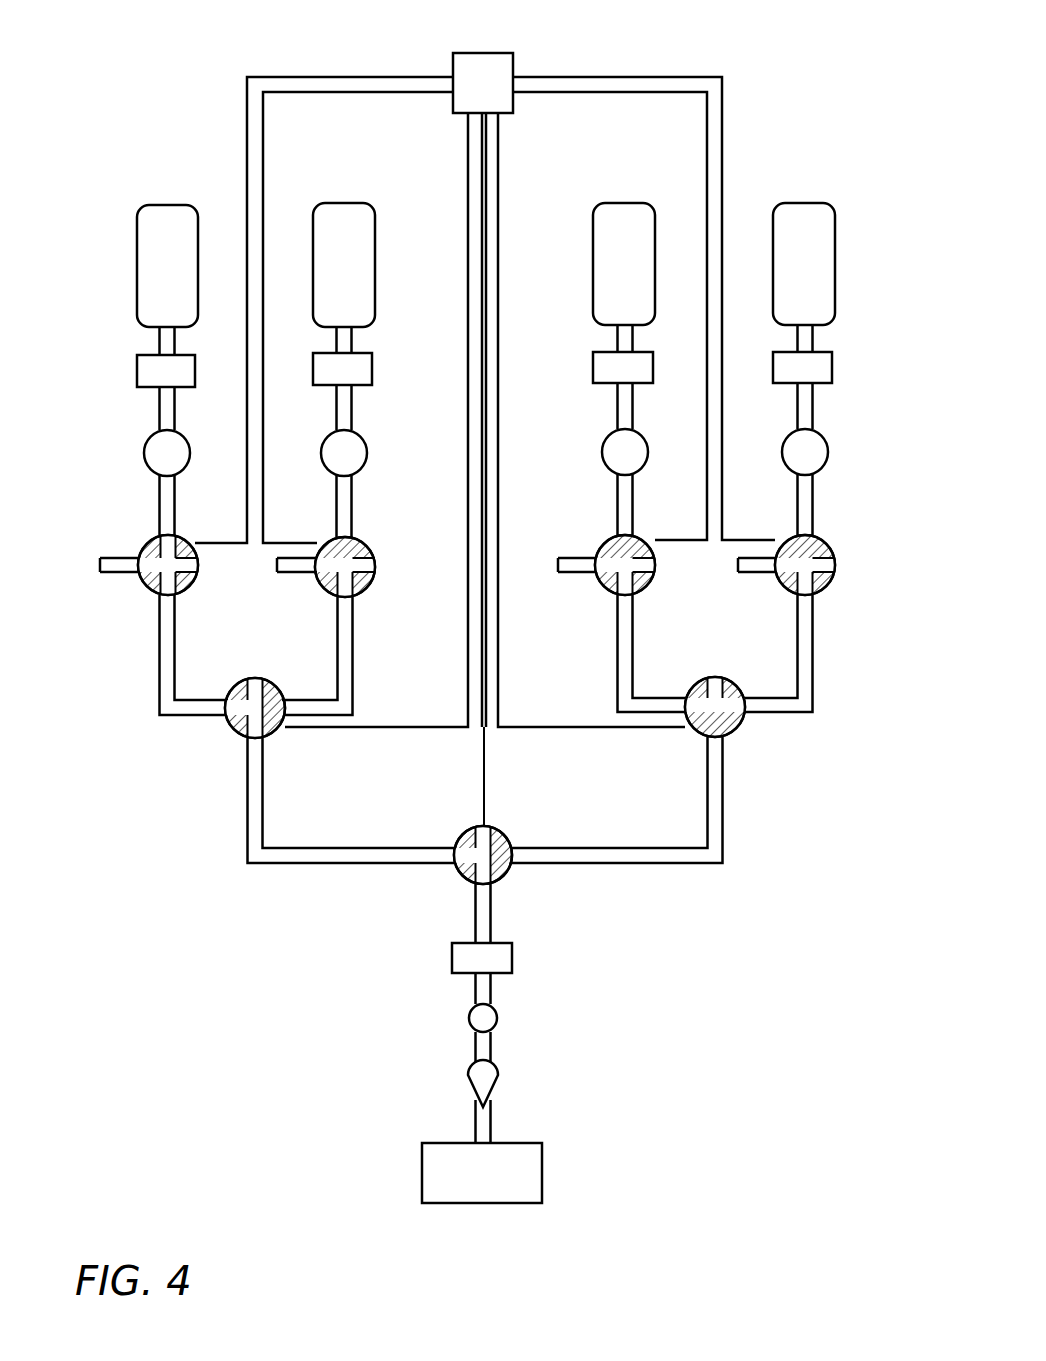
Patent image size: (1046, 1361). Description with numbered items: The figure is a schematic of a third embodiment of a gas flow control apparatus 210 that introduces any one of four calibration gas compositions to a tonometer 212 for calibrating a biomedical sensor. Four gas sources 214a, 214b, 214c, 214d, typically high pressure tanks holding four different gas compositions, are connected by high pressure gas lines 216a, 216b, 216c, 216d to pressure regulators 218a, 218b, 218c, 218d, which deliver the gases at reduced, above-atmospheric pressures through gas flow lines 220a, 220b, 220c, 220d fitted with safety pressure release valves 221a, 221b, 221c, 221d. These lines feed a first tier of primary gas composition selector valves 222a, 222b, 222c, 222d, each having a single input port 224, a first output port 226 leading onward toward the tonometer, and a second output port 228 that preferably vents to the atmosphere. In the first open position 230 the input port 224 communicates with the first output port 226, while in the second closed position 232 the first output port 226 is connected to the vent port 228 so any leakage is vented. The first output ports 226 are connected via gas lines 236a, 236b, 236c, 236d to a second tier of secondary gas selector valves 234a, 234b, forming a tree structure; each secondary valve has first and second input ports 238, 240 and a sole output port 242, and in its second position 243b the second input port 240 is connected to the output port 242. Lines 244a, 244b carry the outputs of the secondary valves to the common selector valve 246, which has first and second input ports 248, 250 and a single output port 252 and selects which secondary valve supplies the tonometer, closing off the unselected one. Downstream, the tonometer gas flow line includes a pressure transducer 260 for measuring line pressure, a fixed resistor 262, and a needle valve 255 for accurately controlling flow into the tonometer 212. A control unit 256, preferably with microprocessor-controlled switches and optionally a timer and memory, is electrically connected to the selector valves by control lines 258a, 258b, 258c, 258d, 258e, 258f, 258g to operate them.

The gas flow control apparatus 210 is at (182, 92).
The tonometer 212 is at (520, 1143).
The first gas source 214a is at (165, 205).
The second gas source 214b is at (375, 230).
The third gas source 214c is at (632, 205).
The fourth gas source 214d is at (810, 205).
The high pressure gas line 216a is at (159, 340).
The high pressure gas line 216b is at (352, 343).
The high pressure gas line 216c is at (617, 340).
The high pressure gas line 216d is at (812, 343).
The first pressure regulator 218a is at (137, 370).
The second pressure regulator 218b is at (372, 362).
The third pressure regulator 218c is at (593, 365).
The fourth pressure regulator 218d is at (832, 365).
The gas flow line 220a is at (160, 508).
The gas flow line 220b is at (352, 508).
The gas flow line 220c is at (617, 492).
The gas flow line 220d is at (812, 492).
The safety pressure release valve 221a is at (148, 445).
The safety pressure release valve 221b is at (364, 440).
The safety pressure release valve 221c is at (606, 445).
The safety pressure release valve 221d is at (825, 440).
The first primary gas composition selector valve 222a is at (208, 600).
The second primary gas composition selector valve 222b is at (383, 600).
The third primary gas composition selector valve 222c is at (597, 600).
The fourth primary gas composition selector valve 222d is at (778, 600).
The input port 224 is at (172, 545).
The first output port 226 is at (160, 597).
The second output port 228 is at (122, 562).
The first open position 230 is at (146, 580).
The second closed position 232 is at (366, 549).
The secondary gas selector valve 234a is at (215, 757).
The secondary gas selector valve 234b is at (680, 752).
The gas line 236a is at (174, 640).
The gas line 236b is at (353, 660).
The gas line 236c is at (617, 660).
The gas line 236d is at (795, 710).
The first input port 238 is at (225, 716).
The second input port 240 is at (282, 690).
The output port 242 is at (264, 742).
The second position 243b is at (733, 735).
The fluid line 244a is at (330, 870).
The fluid line 244b is at (722, 832).
The common selector valve 246 is at (530, 907).
The first input port 248 is at (452, 848).
The second input port 250 is at (515, 848).
The output port 252 is at (472, 883).
The needle valve 255 is at (469, 1085).
The control unit 256 is at (486, 55).
The control line 258a is at (312, 77).
The control line 258b is at (365, 92).
The control line 258c is at (590, 92).
The control line 258d is at (622, 77).
The control line 258e is at (468, 135).
The control line 258f is at (500, 135).
The control line 258g is at (486, 745).
The pressure transducer 260 is at (452, 960).
The fixed resistor 262 is at (471, 1023).